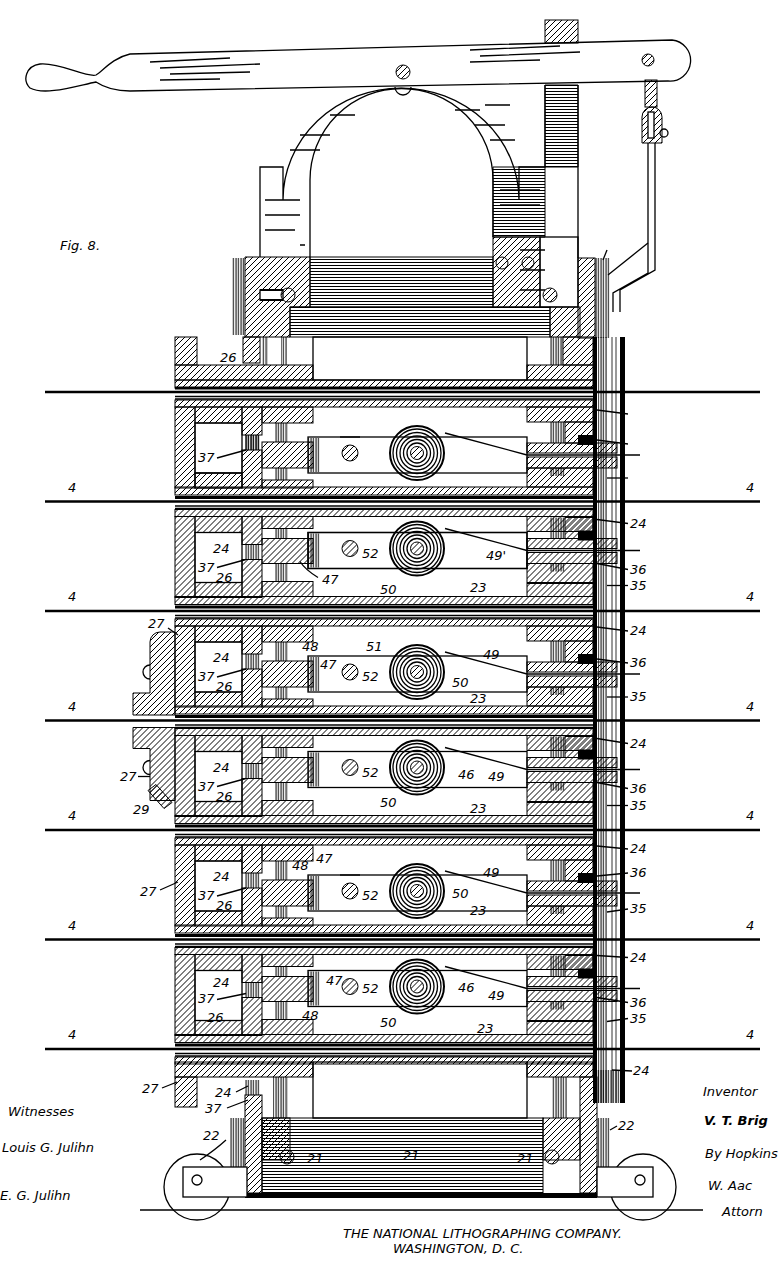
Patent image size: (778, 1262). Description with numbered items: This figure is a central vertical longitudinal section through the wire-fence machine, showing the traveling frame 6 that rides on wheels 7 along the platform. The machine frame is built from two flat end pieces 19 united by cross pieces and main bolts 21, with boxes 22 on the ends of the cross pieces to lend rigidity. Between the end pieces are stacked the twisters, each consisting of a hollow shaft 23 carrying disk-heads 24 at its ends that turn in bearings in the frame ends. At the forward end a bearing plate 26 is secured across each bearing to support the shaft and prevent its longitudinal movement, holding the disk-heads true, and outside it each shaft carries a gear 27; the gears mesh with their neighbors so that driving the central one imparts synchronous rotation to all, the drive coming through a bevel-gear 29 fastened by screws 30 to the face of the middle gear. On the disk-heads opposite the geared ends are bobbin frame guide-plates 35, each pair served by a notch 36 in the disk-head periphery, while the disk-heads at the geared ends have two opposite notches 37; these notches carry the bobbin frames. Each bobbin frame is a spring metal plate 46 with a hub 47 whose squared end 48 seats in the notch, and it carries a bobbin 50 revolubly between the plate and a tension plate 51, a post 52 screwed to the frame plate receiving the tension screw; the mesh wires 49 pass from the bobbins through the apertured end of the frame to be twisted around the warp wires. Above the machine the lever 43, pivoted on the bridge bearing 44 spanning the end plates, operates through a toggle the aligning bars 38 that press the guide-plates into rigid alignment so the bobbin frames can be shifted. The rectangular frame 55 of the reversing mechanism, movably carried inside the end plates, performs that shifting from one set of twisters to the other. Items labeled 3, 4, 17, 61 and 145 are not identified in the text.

The upper chamber 3 is at (420, 358).
The shaft / section line 4 is at (402, 432).
The frame 6 is at (384, 1090).
The wheels 7 is at (172, 1165).
The frame post 17 is at (243, 352).
The end pieces 19 is at (606, 324).
The main bolts 21 is at (420, 297).
The boxes 22 is at (238, 260).
The hollow shaft 23 is at (558, 446).
The disk-heads 24 is at (228, 447).
The bearing plate 26 is at (220, 472).
The gear 27 is at (171, 447).
The bevel-gear 29 is at (150, 673).
The screws 30 is at (133, 675).
The bobbin frame guide-plates 35 is at (617, 350).
The notch 36 is at (612, 340).
The notches 37 is at (285, 350).
The aligning bars 38 is at (623, 1092).
The lever 43 is at (358, 67).
The bridge bearing 44 is at (500, 150).
The spring metal plate 46 is at (417, 551).
The hub 47 is at (287, 447).
The squared end 48 is at (254, 449).
The mesh wires 49 is at (417, 450).
The bobbins 50 is at (415, 450).
The tension plate 51 is at (351, 429).
The post 52 is at (360, 455).
The rectangular frame 55 is at (290, 353).
The stud 61 is at (361, 865).
The link 145 is at (660, 110).